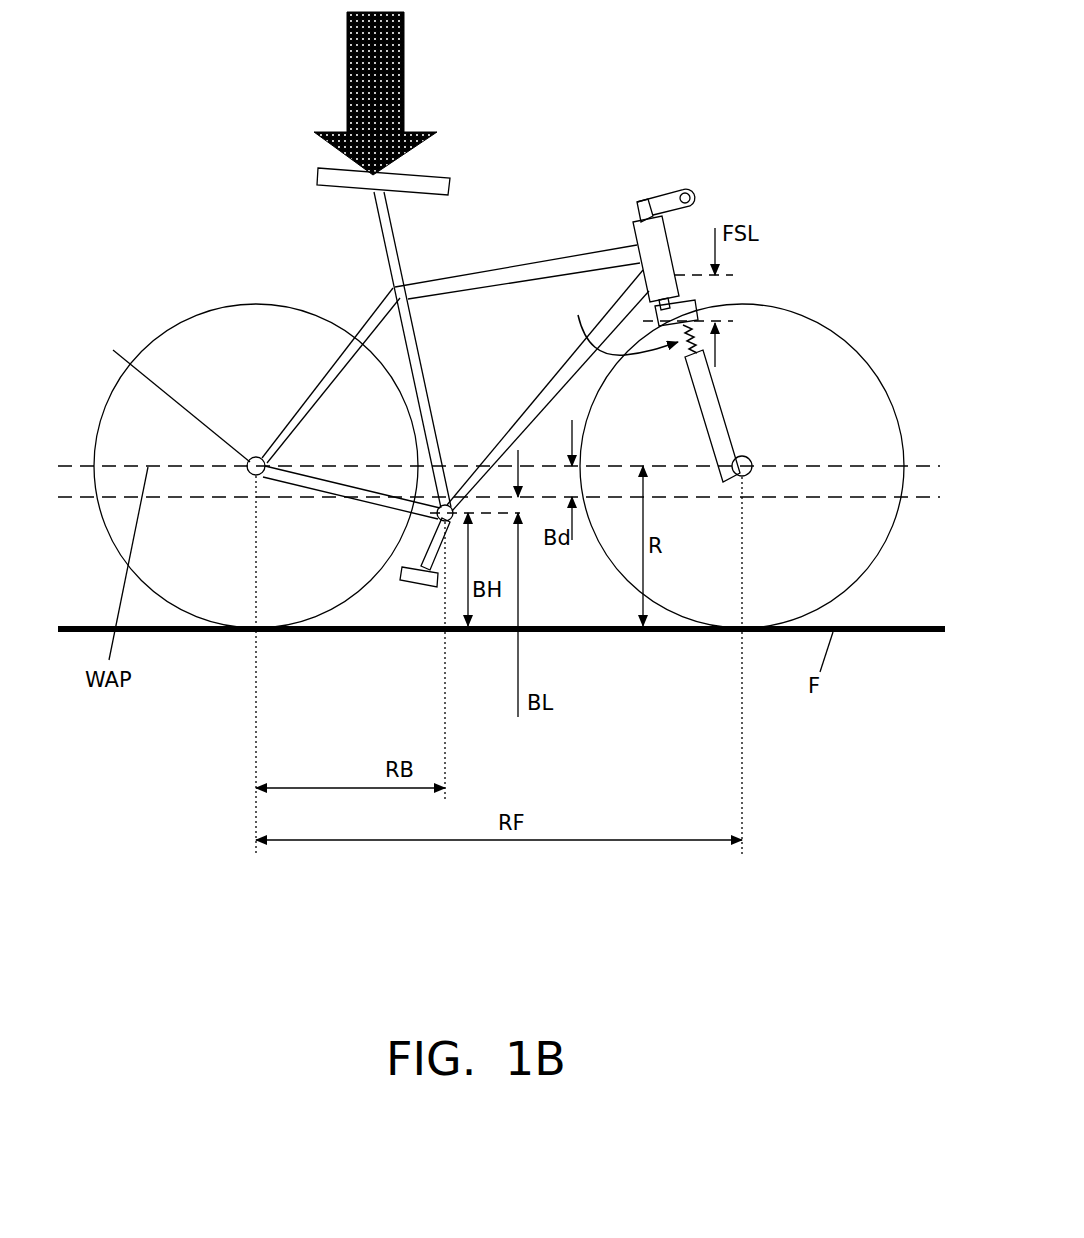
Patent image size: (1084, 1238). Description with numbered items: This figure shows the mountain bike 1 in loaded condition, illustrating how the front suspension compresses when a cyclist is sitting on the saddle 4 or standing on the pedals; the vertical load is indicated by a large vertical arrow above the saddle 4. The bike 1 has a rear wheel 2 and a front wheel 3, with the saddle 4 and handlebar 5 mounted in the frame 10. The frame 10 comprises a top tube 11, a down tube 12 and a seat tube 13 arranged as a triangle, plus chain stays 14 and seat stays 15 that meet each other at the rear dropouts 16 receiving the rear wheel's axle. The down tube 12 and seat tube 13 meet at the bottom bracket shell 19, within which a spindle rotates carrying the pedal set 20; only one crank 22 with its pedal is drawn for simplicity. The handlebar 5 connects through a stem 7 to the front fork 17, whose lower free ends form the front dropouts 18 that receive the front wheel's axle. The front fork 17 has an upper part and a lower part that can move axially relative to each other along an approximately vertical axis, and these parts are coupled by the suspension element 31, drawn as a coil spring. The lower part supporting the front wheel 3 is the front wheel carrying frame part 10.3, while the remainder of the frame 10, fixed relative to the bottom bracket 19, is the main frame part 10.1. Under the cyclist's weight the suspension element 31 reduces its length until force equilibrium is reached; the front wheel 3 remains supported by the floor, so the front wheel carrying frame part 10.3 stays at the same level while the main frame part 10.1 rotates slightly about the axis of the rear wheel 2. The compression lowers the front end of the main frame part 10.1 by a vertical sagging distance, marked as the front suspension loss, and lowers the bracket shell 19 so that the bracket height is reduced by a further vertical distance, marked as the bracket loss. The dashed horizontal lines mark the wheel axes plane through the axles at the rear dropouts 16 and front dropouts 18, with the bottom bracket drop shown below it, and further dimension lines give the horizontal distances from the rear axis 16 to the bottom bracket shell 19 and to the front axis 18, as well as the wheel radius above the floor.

The mountain bike 1 is at (231, 102).
The rear wheel 2 is at (177, 322).
The front wheel 3 is at (803, 315).
The saddle 4 is at (445, 183).
The handlebar 5 is at (693, 192).
The stem 7 is at (645, 207).
The frame 10 is at (537, 187).
The main frame part 10.1 is at (592, 243).
The front wheel carrying frame part 10.3 is at (728, 404).
The top tube 11 is at (530, 258).
The down tube 12 is at (567, 357).
The seat tube 13 is at (423, 358).
The chain stays 14 is at (300, 508).
The seat stays 15 is at (337, 358).
The rear dropouts 16 is at (176, 401).
The front fork 17 is at (713, 375).
The front dropouts 18 is at (748, 459).
The bottom bracket shell 19 is at (448, 503).
The pedal set 20 is at (358, 665).
The crank 22 is at (412, 572).
The suspension element 31 is at (630, 321).